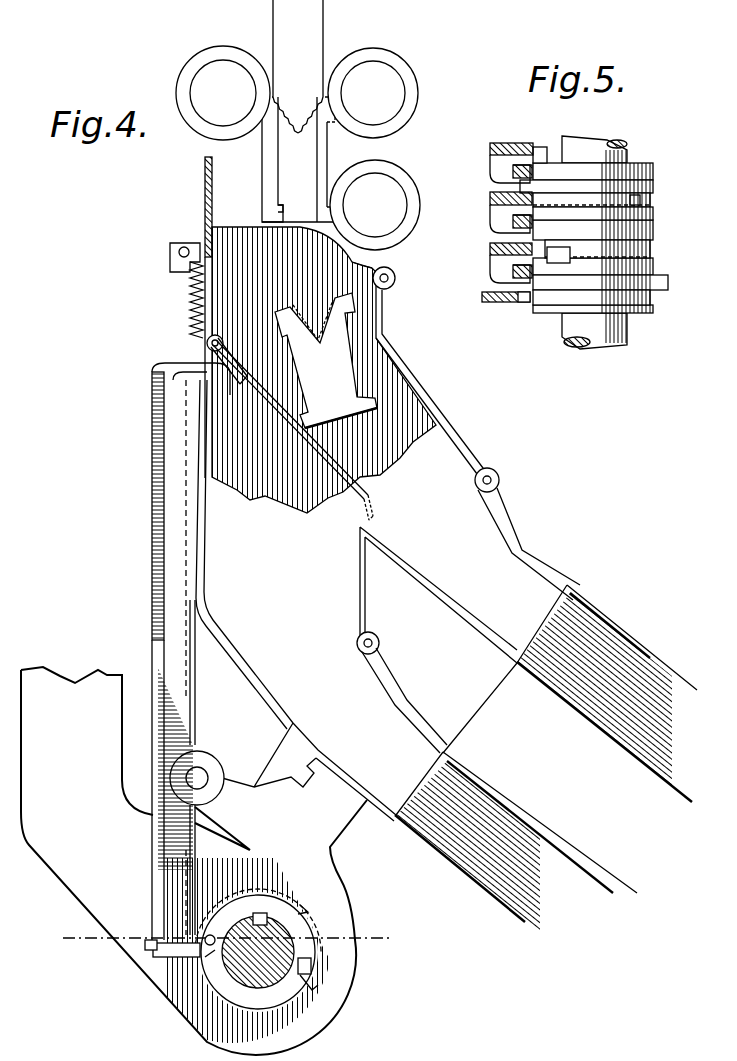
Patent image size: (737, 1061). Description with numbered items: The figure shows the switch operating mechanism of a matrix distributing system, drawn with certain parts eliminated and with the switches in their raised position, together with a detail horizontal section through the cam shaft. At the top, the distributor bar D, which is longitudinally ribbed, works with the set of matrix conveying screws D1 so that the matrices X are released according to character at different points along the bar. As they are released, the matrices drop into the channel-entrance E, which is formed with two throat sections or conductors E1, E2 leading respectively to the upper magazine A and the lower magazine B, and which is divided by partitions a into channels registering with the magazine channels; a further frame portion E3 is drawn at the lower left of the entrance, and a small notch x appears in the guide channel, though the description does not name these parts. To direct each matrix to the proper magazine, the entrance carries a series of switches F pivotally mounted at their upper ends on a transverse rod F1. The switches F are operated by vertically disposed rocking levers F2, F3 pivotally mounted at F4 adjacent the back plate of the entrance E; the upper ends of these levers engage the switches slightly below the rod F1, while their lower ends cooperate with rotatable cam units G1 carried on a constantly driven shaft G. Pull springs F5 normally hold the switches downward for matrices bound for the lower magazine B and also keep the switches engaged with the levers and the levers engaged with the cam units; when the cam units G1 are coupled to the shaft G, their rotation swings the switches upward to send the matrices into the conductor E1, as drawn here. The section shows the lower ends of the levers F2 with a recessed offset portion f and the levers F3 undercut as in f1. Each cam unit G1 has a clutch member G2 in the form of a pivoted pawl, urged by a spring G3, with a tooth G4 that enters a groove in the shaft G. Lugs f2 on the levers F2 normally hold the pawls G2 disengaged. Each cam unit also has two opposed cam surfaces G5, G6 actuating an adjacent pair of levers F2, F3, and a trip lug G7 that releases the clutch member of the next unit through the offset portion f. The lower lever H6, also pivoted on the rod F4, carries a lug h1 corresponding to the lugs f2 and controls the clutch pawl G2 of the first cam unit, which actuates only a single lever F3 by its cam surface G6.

In FIG. 4, the distributor bar D is at (298, 66).
In FIG. 4, the matrix conveying screws D1 is at (298, 148).
In FIG. 4, the matrices X is at (338, 424).
In FIG. 4, the notch of channel x is at (288, 199).
In FIG. 4, the channel-entrance E is at (361, 455).
In FIG. 4, the partitions a is at (343, 257).
In FIG. 4, the pull springs F5 is at (188, 300).
In FIG. 4, the transverse rod F1 is at (221, 340).
In FIG. 4, the switches F is at (331, 478).
In FIG. 4, the throat section or conductor E1 is at (517, 556).
In FIG. 4, the upper magazine A is at (594, 632).
In FIG. 4, the throat section or conductor E2 is at (385, 707).
In FIG. 4, the lower magazine B is at (512, 817).
In FIG. 4, the pivot rod F4 is at (200, 772).
In FIG. 4, the frame extension E3 is at (107, 684).
In FIG. 4, the rocking lever F2 is at (158, 540).
In FIG. 5, the rocking lever F2 is at (504, 143).
In FIG. 4, the rocking lever F3 is at (176, 587).
In FIG. 5, the rocking lever F3 is at (505, 172).
In FIG. 4, the shaft G is at (290, 940).
In FIG. 5, the shaft G is at (612, 142).
In FIG. 4, the cam surface G6 is at (252, 903).
In FIG. 5, the cam surface G6 is at (625, 160).
In FIG. 4, the tooth G4 is at (267, 918).
In FIG. 4, the clutch member or connector G2 is at (313, 970).
In FIG. 4, the trip lug G7 is at (312, 977).
In FIG. 5, the trip lug G7 is at (557, 180).
In FIG. 4, the cam units G1 is at (231, 993).
In FIG. 5, the cam units G1 is at (650, 170).
In FIG. 5, the cam surface G5 is at (650, 190).
In FIG. 5, the spring G3 is at (640, 200).
In FIG. 4, the recessed offset portion f is at (165, 953).
In FIG. 4, the undercut f1 is at (153, 943).
In FIG. 4, the lugs f2 is at (207, 957).
In FIG. 5, the lugs f2 is at (568, 147).
In FIG. 5, the lower lever H6 is at (495, 302).
In FIG. 5, the lug h1 is at (524, 302).